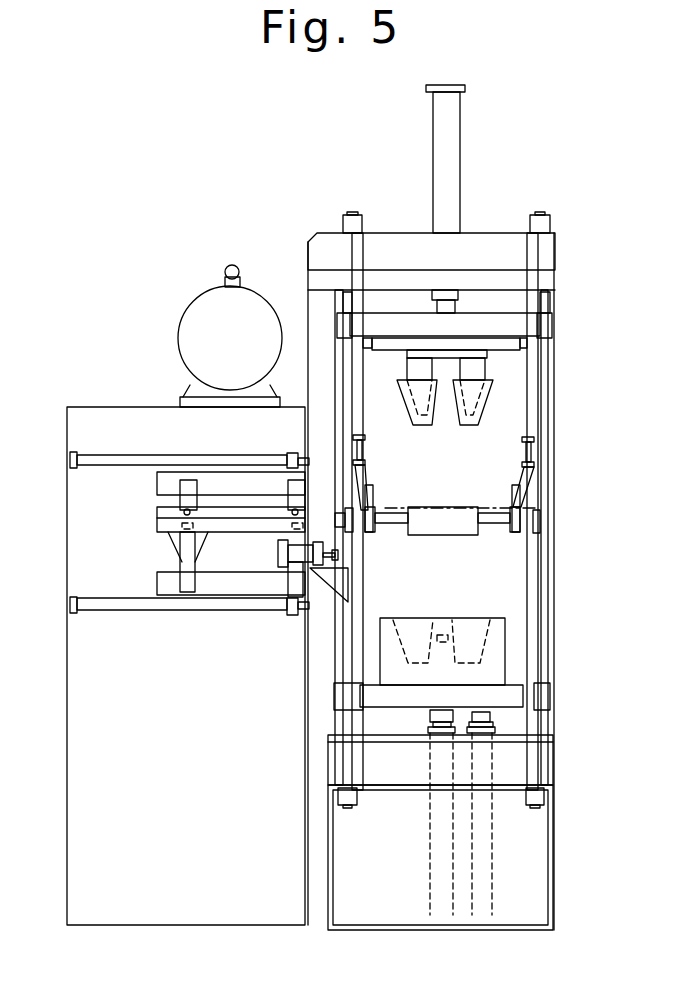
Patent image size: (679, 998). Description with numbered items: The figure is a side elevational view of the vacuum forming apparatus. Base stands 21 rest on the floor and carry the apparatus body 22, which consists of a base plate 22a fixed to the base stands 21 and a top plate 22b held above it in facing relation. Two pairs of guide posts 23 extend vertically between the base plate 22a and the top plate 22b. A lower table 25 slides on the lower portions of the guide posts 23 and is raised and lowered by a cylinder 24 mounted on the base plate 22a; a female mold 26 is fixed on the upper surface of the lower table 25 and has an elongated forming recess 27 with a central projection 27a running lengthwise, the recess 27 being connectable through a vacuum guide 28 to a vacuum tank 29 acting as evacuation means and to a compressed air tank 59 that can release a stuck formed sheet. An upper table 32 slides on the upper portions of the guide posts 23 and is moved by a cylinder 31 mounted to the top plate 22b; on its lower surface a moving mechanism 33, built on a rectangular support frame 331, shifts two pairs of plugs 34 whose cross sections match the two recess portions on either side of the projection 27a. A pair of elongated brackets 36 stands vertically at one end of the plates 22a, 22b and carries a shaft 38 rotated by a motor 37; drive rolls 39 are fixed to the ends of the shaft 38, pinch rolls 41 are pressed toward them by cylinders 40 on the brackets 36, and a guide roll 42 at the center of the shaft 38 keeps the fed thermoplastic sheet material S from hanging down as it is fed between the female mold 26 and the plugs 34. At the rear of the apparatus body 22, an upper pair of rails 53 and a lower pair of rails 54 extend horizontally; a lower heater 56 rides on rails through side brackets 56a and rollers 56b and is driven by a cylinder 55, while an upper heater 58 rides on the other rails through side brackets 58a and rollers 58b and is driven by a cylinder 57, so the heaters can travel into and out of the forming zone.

The base stands 21 is at (553, 860).
The apparatus body 22 is at (553, 775).
The base plate 22a is at (540, 758).
The top plate 22b is at (482, 247).
The guide posts 23 is at (547, 620).
The cylinder 24 is at (435, 728).
The lower table 25 is at (540, 702).
The female mold 26 is at (507, 658).
The forming recess 27 is at (417, 640).
The central projection 27a is at (440, 640).
The vacuum guide 28 is at (490, 728).
The vacuum tank 29 is at (78, 797).
The cylinder 31 is at (460, 145).
The upper table 32 is at (547, 328).
The moving mechanism 33 is at (498, 351).
The support frame 331 is at (380, 343).
The plugs 34 is at (407, 392).
The brackets 36 is at (357, 280).
The motor 37 is at (300, 557).
The shaft 38 is at (395, 525).
The drive rolls 39 is at (368, 535).
The cylinders 40 is at (365, 448).
The pinch rolls 41 is at (373, 495).
The guide roll 42 is at (452, 528).
The thermoplastic sheet material S is at (400, 507).
The rails 53 is at (157, 525).
The rails 54 is at (157, 512).
The cylinder 55 is at (115, 610).
The lower heater 56 is at (157, 583).
The side brackets 56a is at (188, 562).
The rollers 56b is at (182, 526).
The cylinder 57 is at (150, 455).
The upper heater 58 is at (222, 472).
The side brackets 58a is at (187, 480).
The rollers 58b is at (184, 511).
The compressed air tank 59 is at (188, 312).